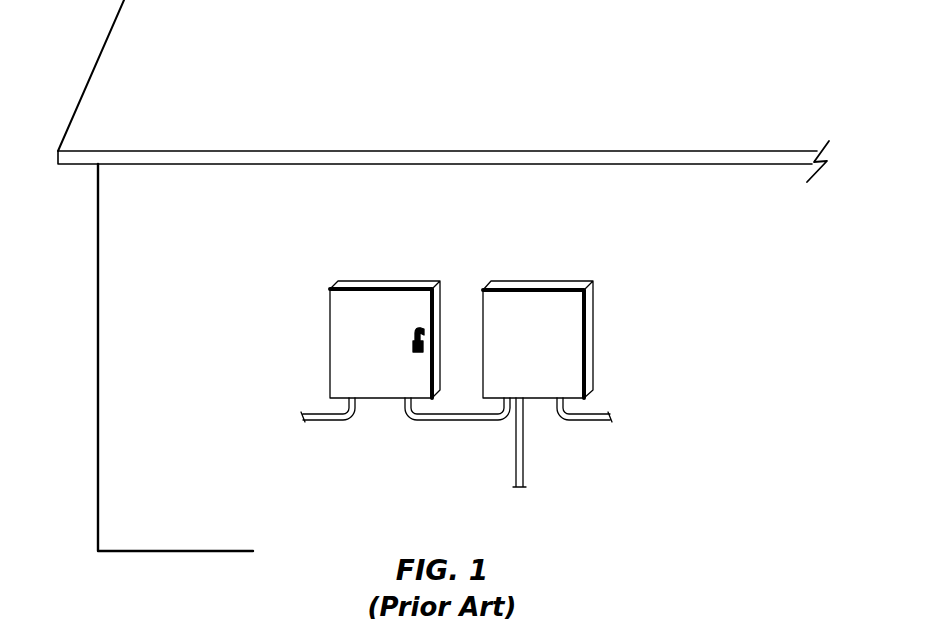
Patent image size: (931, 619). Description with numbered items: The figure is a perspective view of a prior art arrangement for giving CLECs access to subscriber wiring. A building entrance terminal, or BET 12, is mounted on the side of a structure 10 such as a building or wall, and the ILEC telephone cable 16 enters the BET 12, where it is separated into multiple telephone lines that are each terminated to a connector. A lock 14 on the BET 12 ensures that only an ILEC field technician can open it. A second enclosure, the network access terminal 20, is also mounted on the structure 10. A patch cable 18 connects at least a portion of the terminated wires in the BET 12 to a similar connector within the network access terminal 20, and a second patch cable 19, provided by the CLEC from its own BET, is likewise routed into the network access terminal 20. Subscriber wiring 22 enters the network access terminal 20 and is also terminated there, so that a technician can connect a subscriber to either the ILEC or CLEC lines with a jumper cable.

The structure 10 is at (95, 207).
The BET 12 is at (373, 300).
The lock 14 is at (424, 346).
The ILEC telephone cable 16 is at (334, 419).
The patch cable 18 is at (454, 420).
The second patch cable 19 is at (518, 439).
The network access terminal 20 is at (578, 333).
The subscriber wiring 22 is at (590, 420).